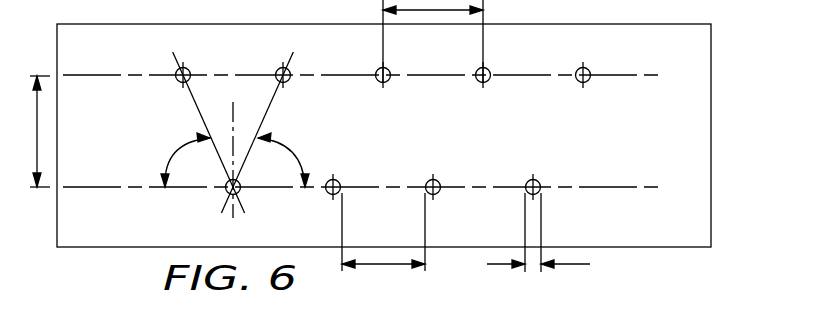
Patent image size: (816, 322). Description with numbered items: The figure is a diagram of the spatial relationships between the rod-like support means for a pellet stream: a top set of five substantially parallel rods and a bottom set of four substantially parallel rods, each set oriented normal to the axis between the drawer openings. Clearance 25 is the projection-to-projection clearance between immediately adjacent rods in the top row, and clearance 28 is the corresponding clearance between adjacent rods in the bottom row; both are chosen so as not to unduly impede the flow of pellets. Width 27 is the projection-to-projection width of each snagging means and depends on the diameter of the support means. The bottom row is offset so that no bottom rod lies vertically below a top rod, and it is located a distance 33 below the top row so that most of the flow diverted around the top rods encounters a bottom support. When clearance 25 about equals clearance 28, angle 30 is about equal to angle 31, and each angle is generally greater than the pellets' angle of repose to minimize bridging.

The clearance 25 is at (428, 12).
The width 27 is at (571, 264).
The clearance 28 is at (381, 264).
The angle 30 is at (173, 152).
The angle 31 is at (293, 150).
The distance 33 is at (38, 127).